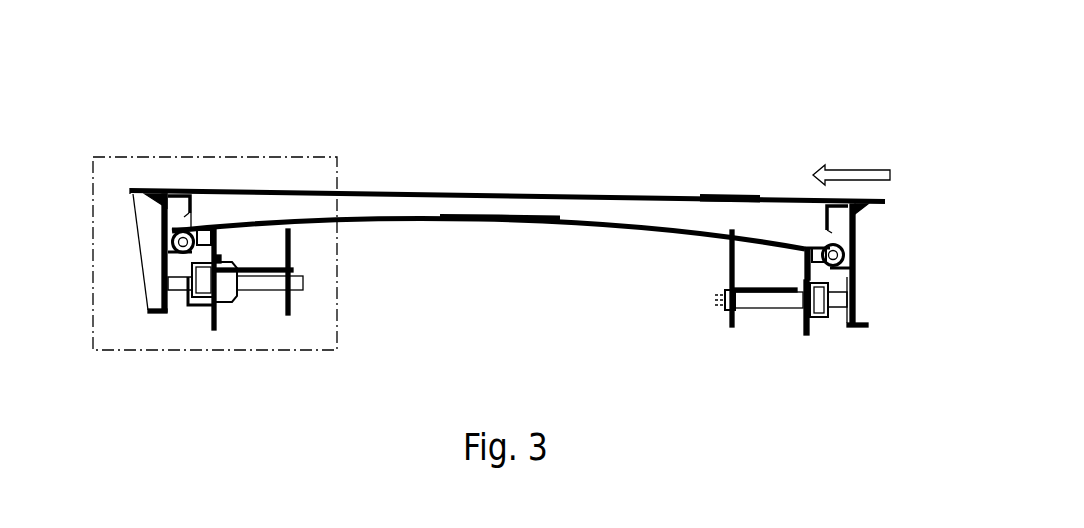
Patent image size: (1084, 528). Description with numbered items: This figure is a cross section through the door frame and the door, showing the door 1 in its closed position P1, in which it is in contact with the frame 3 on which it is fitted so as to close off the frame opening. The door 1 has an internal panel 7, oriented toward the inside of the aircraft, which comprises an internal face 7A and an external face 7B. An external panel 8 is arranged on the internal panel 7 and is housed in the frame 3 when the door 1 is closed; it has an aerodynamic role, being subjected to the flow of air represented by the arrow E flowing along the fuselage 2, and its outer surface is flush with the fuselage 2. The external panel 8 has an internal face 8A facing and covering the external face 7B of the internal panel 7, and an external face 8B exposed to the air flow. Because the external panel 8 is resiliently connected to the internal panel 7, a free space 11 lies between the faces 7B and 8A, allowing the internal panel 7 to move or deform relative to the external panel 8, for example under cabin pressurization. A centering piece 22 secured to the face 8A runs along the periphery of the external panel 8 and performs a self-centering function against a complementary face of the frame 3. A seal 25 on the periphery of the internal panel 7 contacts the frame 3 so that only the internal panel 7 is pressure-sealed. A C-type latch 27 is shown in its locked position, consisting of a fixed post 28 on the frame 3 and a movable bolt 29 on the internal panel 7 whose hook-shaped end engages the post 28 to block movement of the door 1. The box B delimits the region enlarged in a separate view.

The door 1 is at (843, 116).
The fuselage 2 is at (138, 188).
The frame 3 is at (150, 232).
The internal panel 7 is at (595, 228).
The internal face 7A is at (523, 236).
The external face 7B is at (507, 197).
The external panel 8 is at (637, 189).
The internal face 8A is at (728, 214).
The external face 8B is at (728, 186).
The free space 11 is at (412, 197).
The centering piece 22 is at (160, 196).
The seal 25 is at (172, 238).
The latch 27 is at (203, 327).
The fixed post 28 is at (200, 280).
The movable bolt 29 is at (240, 278).
The box B is at (205, 157).
The arrow E is at (866, 168).
The closed position P1 is at (883, 72).